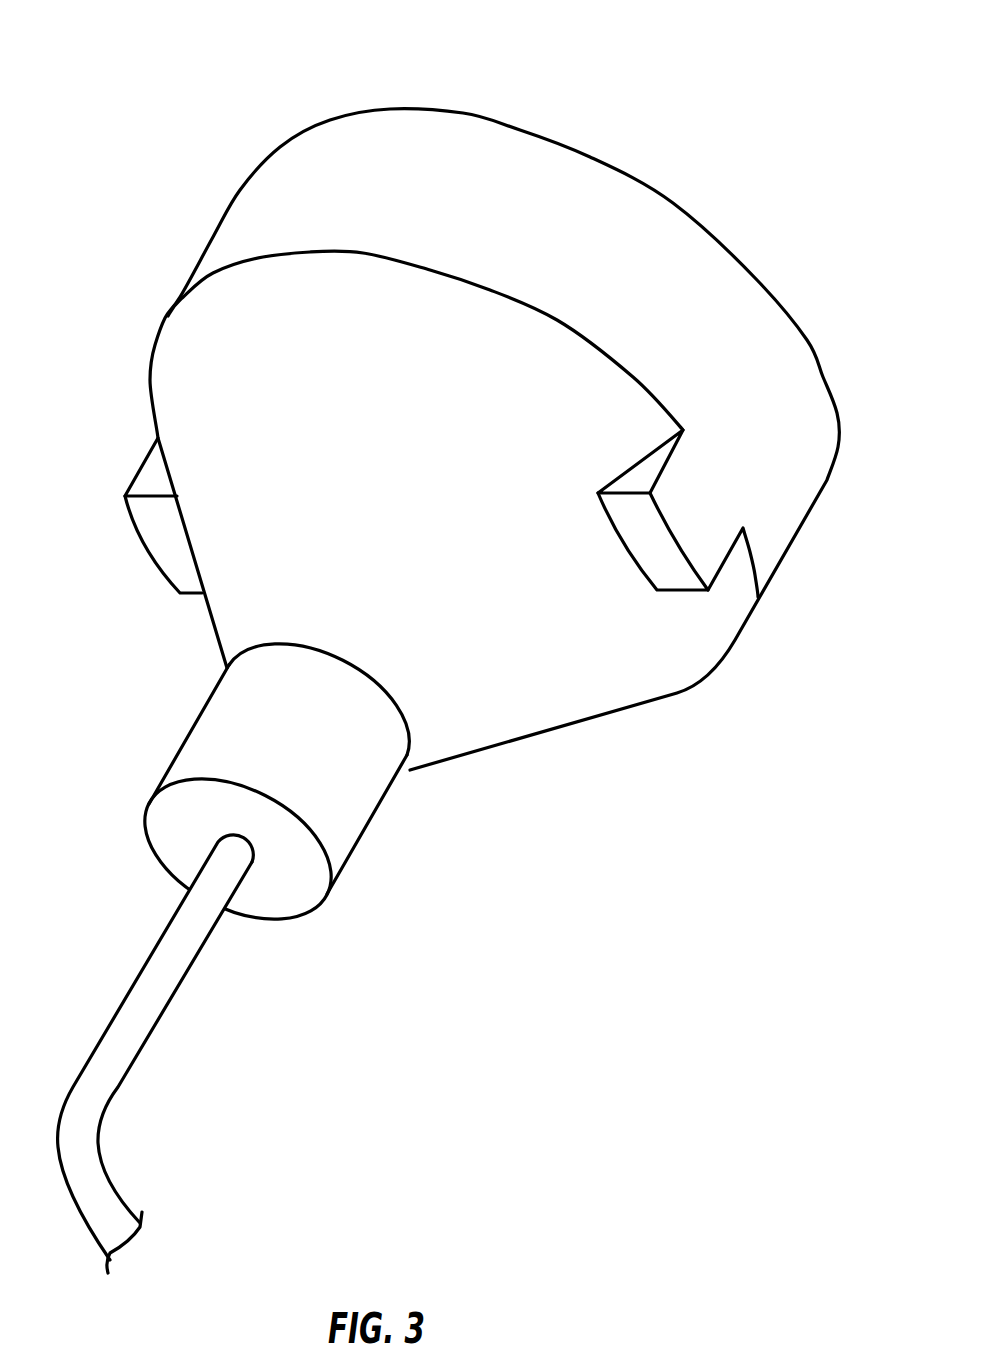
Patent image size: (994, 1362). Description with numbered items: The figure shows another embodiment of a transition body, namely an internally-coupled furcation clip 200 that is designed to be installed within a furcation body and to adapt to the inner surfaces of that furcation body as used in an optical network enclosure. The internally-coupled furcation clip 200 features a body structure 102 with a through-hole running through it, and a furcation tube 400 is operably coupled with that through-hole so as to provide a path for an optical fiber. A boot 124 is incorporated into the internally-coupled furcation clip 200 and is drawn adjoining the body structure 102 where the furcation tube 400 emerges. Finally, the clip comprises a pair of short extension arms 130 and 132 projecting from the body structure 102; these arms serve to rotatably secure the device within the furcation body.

The internally-coupled furcation clip 200 is at (686, 54).
The body structure 102 is at (430, 130).
The short extension arm 130 is at (708, 549).
The short extension arm 132 is at (173, 553).
The boot 124 is at (352, 822).
The furcation tube 400 is at (140, 1032).